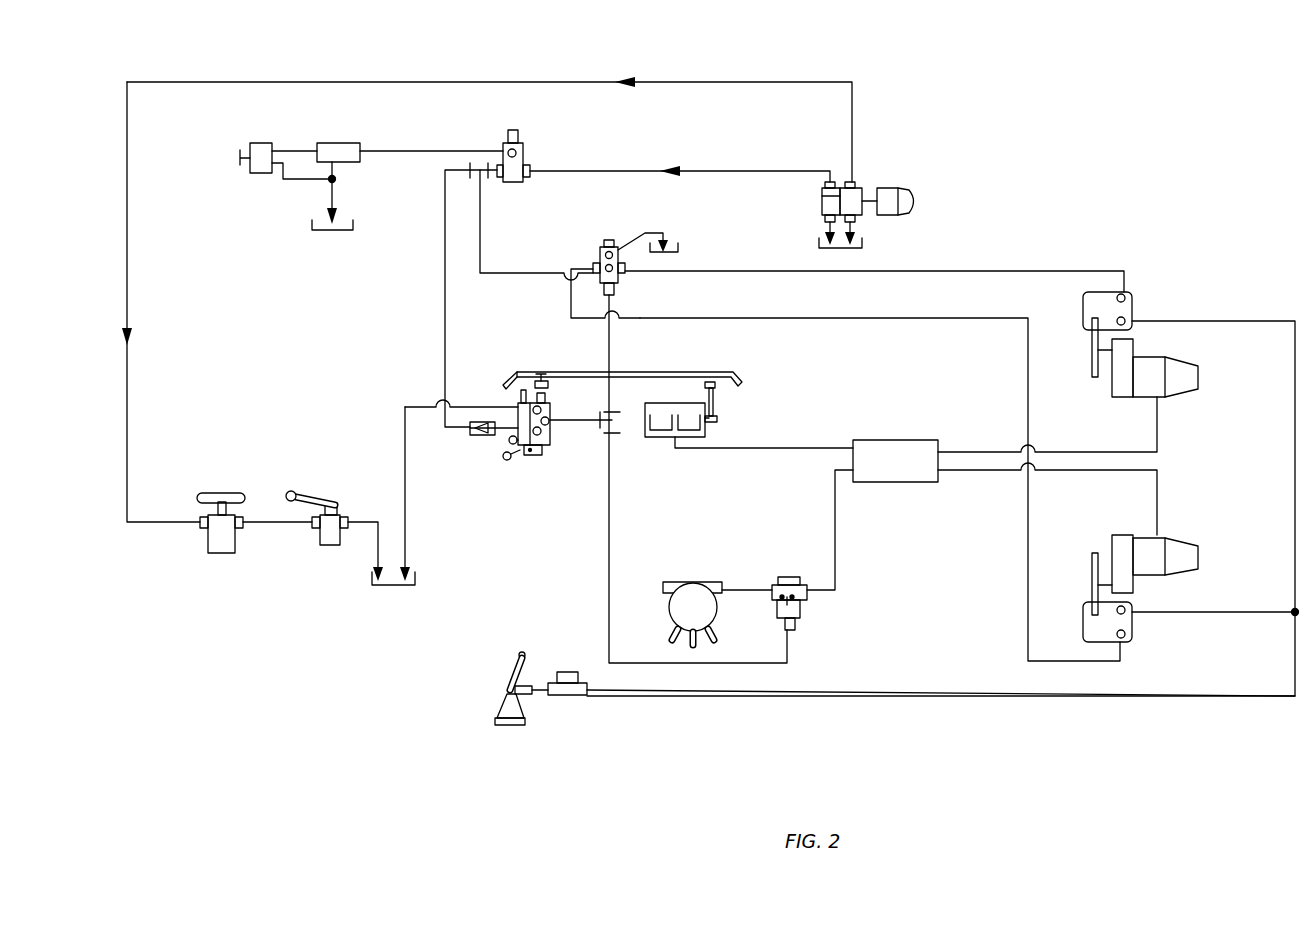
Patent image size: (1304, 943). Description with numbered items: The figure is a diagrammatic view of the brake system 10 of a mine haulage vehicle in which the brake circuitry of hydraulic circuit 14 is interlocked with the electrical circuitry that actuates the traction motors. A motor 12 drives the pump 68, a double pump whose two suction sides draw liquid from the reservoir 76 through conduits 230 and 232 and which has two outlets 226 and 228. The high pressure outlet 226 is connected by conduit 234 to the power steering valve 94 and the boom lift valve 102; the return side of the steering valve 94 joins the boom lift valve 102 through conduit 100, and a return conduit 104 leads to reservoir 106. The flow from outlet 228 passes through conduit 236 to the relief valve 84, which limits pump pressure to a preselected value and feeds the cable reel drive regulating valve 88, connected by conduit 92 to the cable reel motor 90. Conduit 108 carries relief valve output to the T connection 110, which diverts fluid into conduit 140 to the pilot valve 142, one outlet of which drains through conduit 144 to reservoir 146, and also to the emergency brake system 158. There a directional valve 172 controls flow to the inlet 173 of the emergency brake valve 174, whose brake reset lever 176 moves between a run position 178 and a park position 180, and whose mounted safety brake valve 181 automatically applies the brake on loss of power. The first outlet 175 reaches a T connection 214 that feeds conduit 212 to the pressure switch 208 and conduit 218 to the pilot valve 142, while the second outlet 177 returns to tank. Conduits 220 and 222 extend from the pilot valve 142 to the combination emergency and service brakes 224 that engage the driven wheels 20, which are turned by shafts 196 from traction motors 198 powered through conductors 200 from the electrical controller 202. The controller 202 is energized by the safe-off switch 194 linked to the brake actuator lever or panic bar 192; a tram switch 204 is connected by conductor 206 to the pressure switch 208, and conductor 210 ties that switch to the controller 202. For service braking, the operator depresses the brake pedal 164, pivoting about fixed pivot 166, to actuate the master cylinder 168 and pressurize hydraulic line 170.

The hydraulic control system 10 is at (311, 671).
The motor 12 is at (912, 188).
The hydraulic circuit 14 is at (705, 70).
The driven wheel 20 is at (1092, 357).
The pump 68 is at (822, 200).
The reservoir 76 is at (863, 247).
The relief valve 84 is at (525, 152).
The cable reel drive regulating valve 88 is at (343, 143).
The cable reel motor 90 is at (262, 143).
The conduit 92 is at (298, 150).
The power steering valve 94 is at (225, 553).
The conduit 100 is at (278, 522).
The boom lift valve 102 is at (330, 545).
The return conduit 104 is at (363, 521).
The reservoir 106 is at (395, 586).
The conduit 108 is at (445, 185).
The T connection 110 is at (478, 182).
The conduit 140 is at (528, 276).
The pilot valve 142 is at (598, 262).
The conduit 144 is at (633, 242).
The reservoir 146 is at (682, 248).
The emergency brake system 158 is at (503, 354).
The brake pedal 164 is at (518, 665).
The fixed pivot 166 is at (503, 708).
The master cylinder 168 is at (560, 695).
The hydraulic line 170 is at (855, 693).
The directional valve 172 is at (470, 437).
The inlet 173 is at (541, 432).
The emergency brake valve 174 is at (549, 412).
The first outlet 175 is at (549, 421).
The brake reset lever 176 is at (535, 458).
The second outlet 177 is at (518, 400).
The run position 178 is at (507, 462).
The park position 180 is at (510, 440).
The safety brake valve 181 is at (518, 418).
The brake actuator lever 192 is at (637, 372).
The safe-off switch 194 is at (718, 434).
The shafts 196 is at (1105, 352).
The traction motors 198 is at (1200, 375).
The conductors 200 is at (1115, 452).
The electrical controller 202 is at (895, 440).
The tram switch 204 is at (688, 582).
The conductor 206 is at (750, 590).
The pressure switch 208 is at (808, 600).
The conductor 210 is at (837, 520).
The conduit 212 is at (610, 532).
The T connection 214 is at (610, 424).
The conduit 218 is at (611, 350).
The conduit 220 is at (838, 273).
The conduit 222 is at (868, 322).
The combination emergency and service brakes 224 is at (1132, 303).
The high pressure outlet 226 is at (858, 184).
The pressure outlet 228 is at (822, 184).
The conduit 230 is at (825, 221).
The conduit 232 is at (862, 219).
The conduit 234 is at (127, 210).
The conduit 236 is at (730, 171).